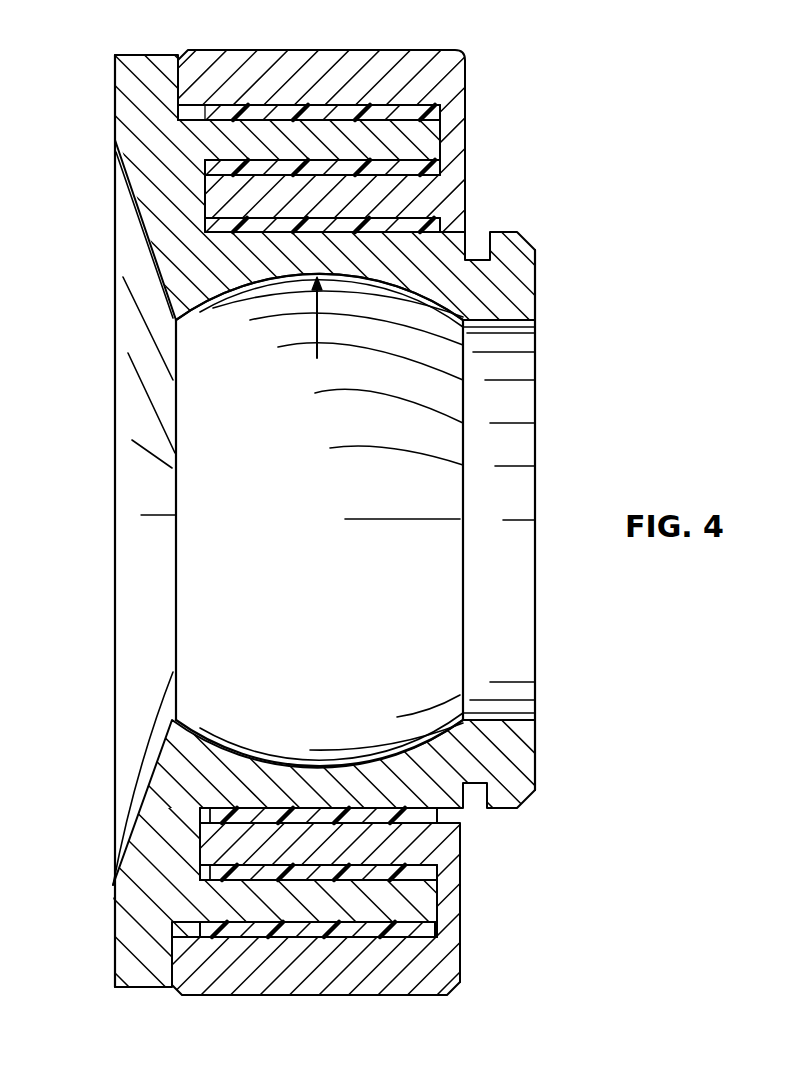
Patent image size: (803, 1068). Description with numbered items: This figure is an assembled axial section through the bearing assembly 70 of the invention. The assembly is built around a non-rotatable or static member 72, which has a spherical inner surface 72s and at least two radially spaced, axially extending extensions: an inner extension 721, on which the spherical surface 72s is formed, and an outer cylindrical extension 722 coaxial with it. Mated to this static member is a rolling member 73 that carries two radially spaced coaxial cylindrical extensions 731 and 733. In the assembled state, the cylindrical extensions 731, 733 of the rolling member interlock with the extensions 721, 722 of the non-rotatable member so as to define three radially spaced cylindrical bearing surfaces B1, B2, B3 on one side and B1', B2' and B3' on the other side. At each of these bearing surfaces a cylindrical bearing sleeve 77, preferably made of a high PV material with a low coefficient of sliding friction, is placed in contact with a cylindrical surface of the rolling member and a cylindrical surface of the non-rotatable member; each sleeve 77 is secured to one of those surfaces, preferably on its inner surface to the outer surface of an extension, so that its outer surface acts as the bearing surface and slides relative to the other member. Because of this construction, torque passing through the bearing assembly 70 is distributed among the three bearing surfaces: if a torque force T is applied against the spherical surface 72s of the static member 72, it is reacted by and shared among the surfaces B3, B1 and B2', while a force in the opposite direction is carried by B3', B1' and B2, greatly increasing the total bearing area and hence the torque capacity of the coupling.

The bearing assembly 70 is at (492, 76).
The non-rotatable member 72 is at (145, 217).
The spherical inner surface 72s is at (250, 473).
The rolling member 73 is at (450, 208).
The inner extension 721 is at (467, 758).
The outer cylindrical extension 722 is at (405, 900).
The cylindrical extension 731 is at (420, 845).
The cylindrical extension 733 is at (405, 963).
The cylindrical bearing sleeve 77 is at (200, 810).
The bearing surface B1 is at (309, 61).
The bearing surface B2 is at (322, 89).
The bearing surface B3 is at (322, 117).
The bearing surface B1' is at (303, 987).
The bearing surface B2' is at (318, 958).
The bearing surface B3' is at (317, 930).
The torque force T is at (317, 332).